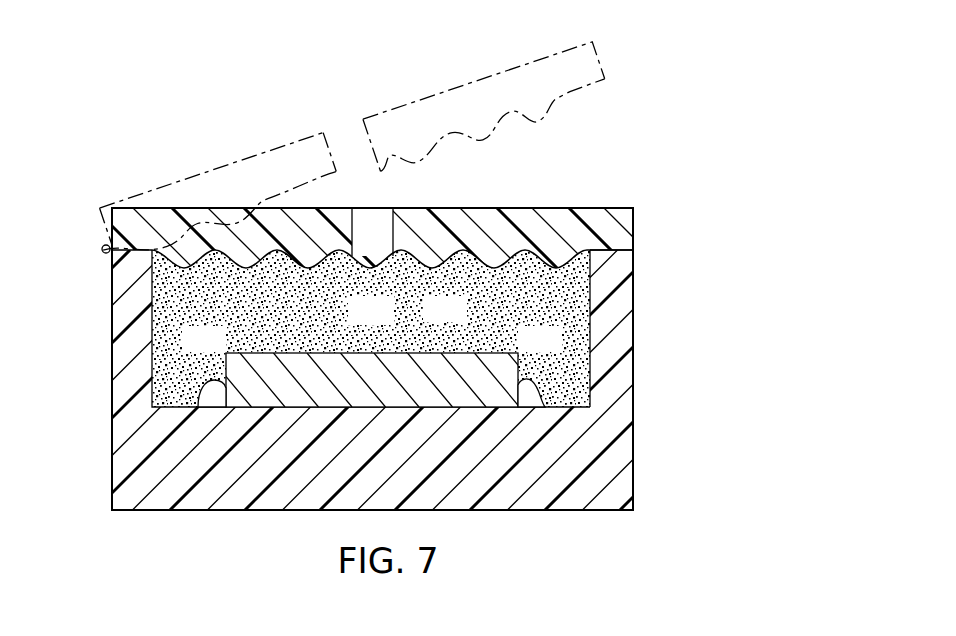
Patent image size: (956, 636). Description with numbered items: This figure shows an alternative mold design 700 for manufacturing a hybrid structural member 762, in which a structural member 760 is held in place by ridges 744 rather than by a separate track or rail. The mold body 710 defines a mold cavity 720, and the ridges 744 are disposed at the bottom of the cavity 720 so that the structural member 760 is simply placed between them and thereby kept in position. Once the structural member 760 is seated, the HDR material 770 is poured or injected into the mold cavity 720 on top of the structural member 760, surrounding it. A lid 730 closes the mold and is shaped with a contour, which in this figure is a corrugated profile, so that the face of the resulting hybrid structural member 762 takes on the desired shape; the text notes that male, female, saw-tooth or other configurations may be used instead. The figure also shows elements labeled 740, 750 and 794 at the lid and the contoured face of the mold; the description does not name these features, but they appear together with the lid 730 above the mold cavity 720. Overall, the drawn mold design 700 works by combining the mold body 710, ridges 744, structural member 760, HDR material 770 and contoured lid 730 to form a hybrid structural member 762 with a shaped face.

The mold design 700 is at (217, 115).
The mold body 710 is at (120, 432).
The mold cavity 720 is at (596, 352).
The lid 730 is at (563, 214).
The cover / lid 740 is at (358, 252).
The ridges 744 is at (212, 381).
The pivot / seal ring 750 is at (102, 248).
The structural member 760 is at (402, 398).
The hybrid structural member 762 is at (392, 322).
The HDR material 770 is at (162, 323).
The wavy engagement surface 794 is at (432, 266).